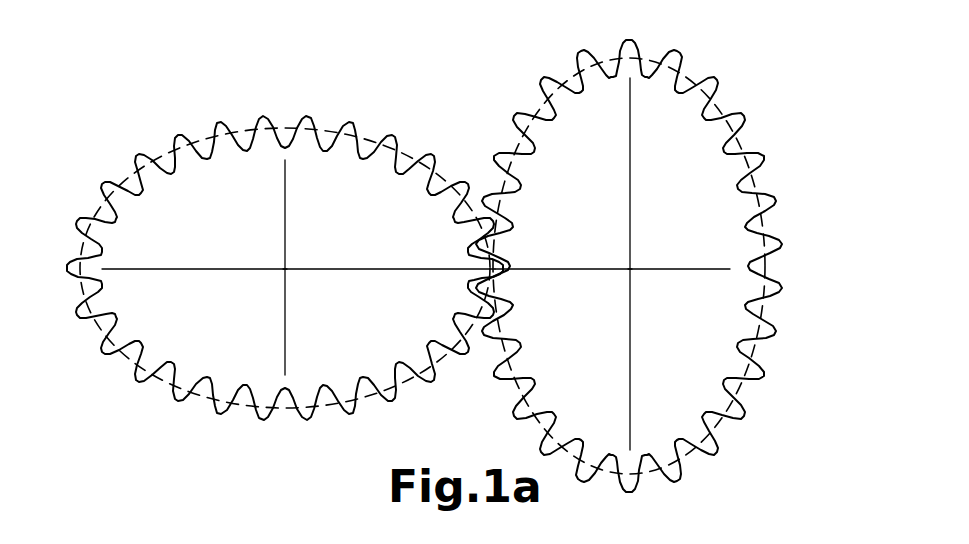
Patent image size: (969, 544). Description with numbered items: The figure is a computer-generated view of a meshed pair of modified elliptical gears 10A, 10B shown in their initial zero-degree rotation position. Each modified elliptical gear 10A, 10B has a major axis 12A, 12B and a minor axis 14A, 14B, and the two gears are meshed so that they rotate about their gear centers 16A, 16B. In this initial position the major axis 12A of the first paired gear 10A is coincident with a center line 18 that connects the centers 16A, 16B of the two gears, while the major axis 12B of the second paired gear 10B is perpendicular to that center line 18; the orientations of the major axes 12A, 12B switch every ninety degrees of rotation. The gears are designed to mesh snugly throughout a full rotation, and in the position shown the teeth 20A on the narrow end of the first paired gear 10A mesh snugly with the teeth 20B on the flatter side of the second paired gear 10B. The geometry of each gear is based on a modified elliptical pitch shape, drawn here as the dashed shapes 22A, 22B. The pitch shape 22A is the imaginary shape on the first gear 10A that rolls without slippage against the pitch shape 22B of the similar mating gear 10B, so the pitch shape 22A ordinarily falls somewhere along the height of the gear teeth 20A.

The first modified elliptical gear 10A is at (191, 104).
The second modified elliptical gear 10B is at (785, 132).
The major axis of the first gear 12A is at (345, 269).
The major axis of the second gear 12B is at (630, 213).
The minor axis of the first gear 14A is at (285, 216).
The minor axis of the second gear 14B is at (585, 270).
The center of the first gear 16A is at (285, 270).
The center of the second gear 16B is at (632, 269).
The center line 18 is at (407, 268).
The teeth of the first gear 20A is at (384, 138).
The teeth of the second gear 20B is at (773, 233).
The pitch shape of the first gear 22A is at (238, 410).
The pitch shape of the second gear 22B is at (693, 457).